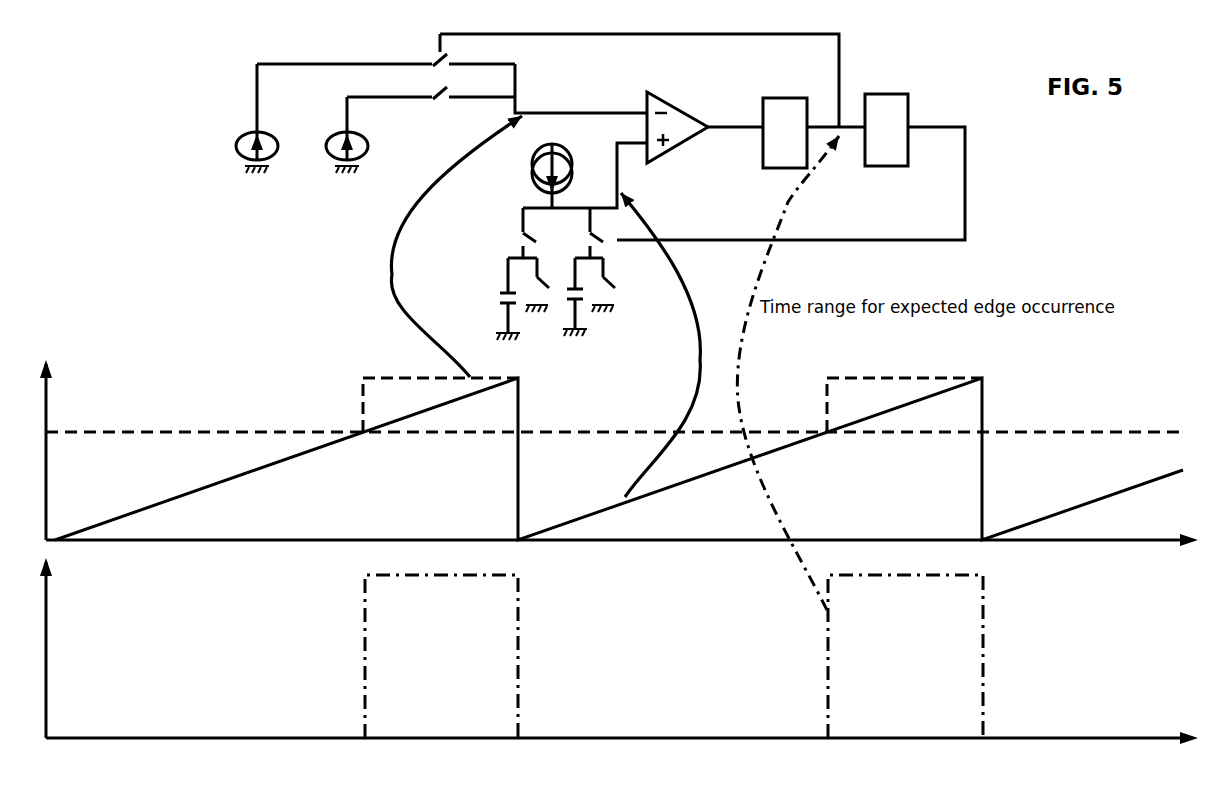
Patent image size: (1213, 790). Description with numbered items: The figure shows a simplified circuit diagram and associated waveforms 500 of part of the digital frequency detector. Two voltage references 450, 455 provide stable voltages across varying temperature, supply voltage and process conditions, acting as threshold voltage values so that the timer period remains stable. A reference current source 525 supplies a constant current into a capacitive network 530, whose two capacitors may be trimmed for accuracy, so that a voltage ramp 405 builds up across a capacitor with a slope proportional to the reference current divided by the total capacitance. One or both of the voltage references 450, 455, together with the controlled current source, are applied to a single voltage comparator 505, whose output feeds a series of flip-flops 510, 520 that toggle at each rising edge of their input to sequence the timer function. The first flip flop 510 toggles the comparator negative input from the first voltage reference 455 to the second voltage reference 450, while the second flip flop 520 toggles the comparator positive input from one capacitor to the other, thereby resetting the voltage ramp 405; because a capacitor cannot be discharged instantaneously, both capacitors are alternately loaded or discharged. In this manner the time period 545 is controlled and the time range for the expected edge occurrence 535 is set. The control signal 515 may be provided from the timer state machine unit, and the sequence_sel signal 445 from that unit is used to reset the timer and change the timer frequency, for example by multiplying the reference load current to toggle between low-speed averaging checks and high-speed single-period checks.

The voltage reference 450 is at (257, 100).
The voltage reference 455 is at (347, 112).
The single voltage comparator 505 is at (670, 96).
The first flip flop 510 is at (764, 98).
The control signal 515 is at (838, 120).
The second flip flop 520 is at (900, 94).
The reference current source 525 is at (540, 172).
The capacitive network 530 is at (498, 244).
The sequence_sel signal 445 is at (885, 238).
The simplified circuit diagram and associated waveforms 500 is at (1075, 197).
The time range for the expected edge occurrence 535 is at (398, 376).
The voltage ramp 405 is at (180, 494).
The time period 545 is at (363, 605).